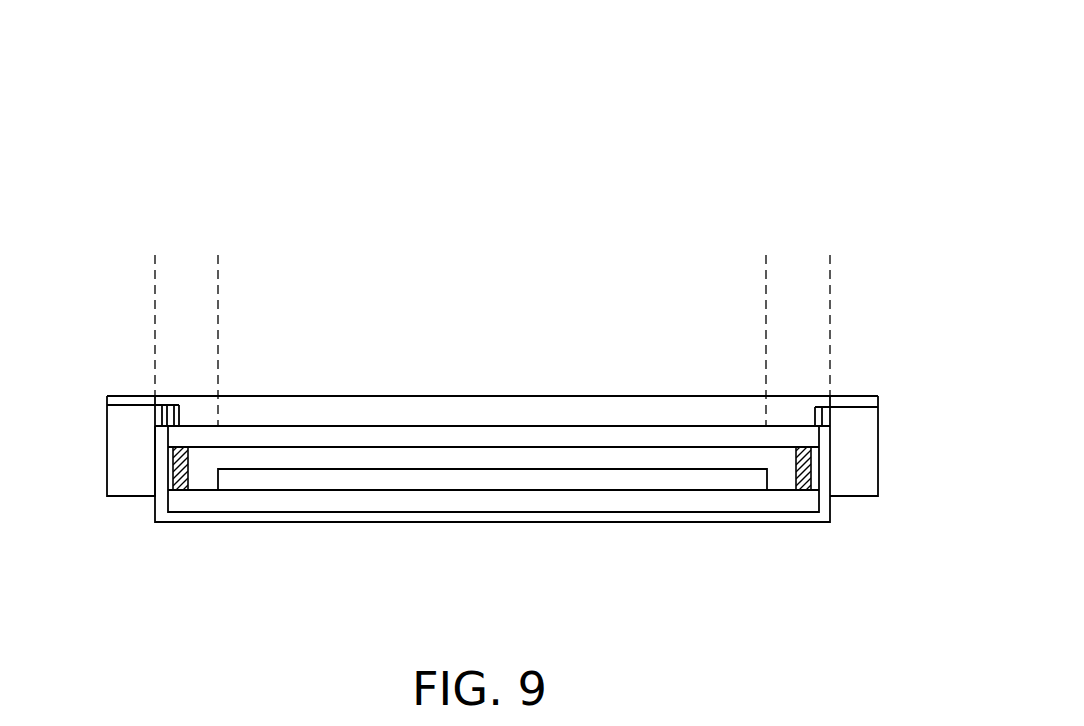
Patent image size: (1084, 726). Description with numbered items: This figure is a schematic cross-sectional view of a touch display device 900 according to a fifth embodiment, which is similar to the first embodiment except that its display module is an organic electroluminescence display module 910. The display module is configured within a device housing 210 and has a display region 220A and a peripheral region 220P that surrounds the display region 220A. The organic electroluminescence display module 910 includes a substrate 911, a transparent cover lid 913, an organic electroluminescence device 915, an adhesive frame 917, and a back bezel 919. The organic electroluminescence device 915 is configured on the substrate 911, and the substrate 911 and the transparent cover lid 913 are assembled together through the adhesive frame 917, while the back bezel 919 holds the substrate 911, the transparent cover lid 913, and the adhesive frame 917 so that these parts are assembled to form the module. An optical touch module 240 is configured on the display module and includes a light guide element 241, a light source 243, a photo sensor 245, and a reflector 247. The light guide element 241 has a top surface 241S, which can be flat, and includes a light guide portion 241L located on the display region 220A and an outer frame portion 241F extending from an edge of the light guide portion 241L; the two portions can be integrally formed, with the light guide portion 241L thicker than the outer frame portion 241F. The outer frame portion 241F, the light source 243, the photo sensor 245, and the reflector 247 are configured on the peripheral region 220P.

The touch display device 900 is at (875, 623).
The organic electroluminescence display module 910 is at (492, 532).
The substrate 911 is at (275, 503).
The transparent cover lid 913 is at (338, 438).
The organic electroluminescence device 915 is at (400, 480).
The adhesive frame 917 is at (413, 588).
The back bezel 919 is at (176, 517).
The device housing 210 is at (132, 483).
The peripheral region 220P is at (218, 259).
The display region 220A is at (766, 259).
The optical touch module 240 is at (683, 53).
The light guide element 241 is at (494, 363).
The outer frame portion 241F is at (128, 396).
The light guide portion 241L is at (379, 415).
The top surface 241S is at (556, 397).
The light source 243 is at (176, 396).
The photo sensor 245 is at (166, 396).
The reflector 247 is at (813, 414).